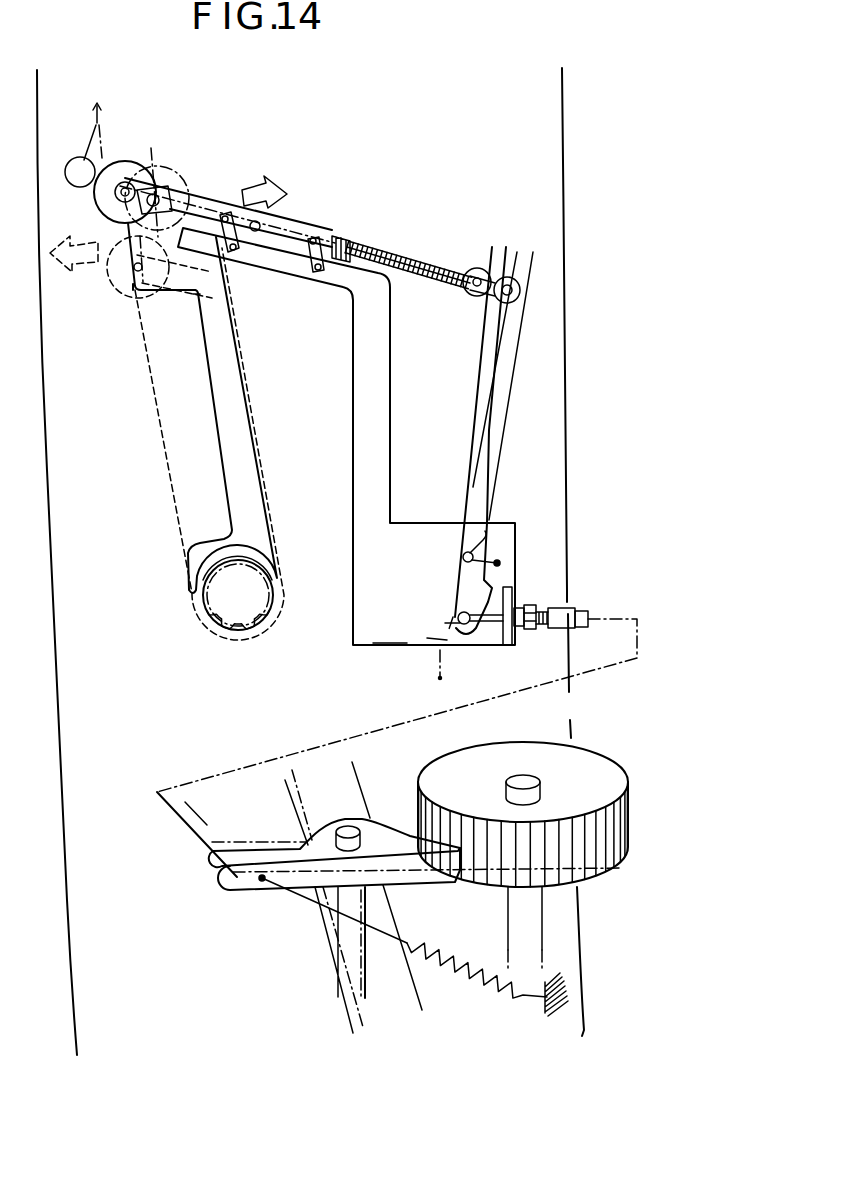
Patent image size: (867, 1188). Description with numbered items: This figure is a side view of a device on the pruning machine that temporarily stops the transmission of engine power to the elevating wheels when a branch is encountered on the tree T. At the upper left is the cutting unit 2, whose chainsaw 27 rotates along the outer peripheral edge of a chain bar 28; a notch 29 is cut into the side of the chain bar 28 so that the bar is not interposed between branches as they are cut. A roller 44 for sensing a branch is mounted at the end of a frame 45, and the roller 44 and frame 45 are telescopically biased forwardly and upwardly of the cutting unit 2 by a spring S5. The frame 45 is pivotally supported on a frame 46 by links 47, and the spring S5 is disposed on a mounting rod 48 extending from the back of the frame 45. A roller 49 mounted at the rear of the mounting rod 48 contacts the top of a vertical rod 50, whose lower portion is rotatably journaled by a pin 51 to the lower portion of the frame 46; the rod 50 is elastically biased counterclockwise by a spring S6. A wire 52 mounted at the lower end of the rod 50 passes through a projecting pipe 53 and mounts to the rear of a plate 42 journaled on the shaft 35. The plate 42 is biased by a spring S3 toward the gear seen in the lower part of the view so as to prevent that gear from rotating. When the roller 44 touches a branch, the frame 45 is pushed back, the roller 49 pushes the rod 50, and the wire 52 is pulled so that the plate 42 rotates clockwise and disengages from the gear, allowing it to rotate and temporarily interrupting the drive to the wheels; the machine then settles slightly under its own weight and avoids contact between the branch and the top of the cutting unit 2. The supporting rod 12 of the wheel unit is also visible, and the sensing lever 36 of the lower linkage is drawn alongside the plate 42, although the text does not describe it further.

The cutting unit 2 is at (122, 371).
The supporting rod 12 is at (572, 745).
The chainsaw 27 is at (158, 438).
The chain bar 28 is at (252, 468).
The notch 29 is at (173, 391).
The shaft 35 is at (343, 932).
The lever 36 is at (353, 782).
The plate 42 is at (397, 853).
The roller 44 is at (137, 167).
The frame 45 is at (351, 259).
The frame 46 is at (288, 272).
The links 47 is at (333, 238).
The mounting rod 48 is at (410, 258).
The roller 49 is at (505, 280).
The vertical rod 50 is at (520, 350).
The pin 51 is at (463, 557).
The wire 52 is at (480, 620).
The projecting pipe 53 is at (577, 607).
The spring S3 is at (498, 988).
The spring S5 is at (375, 243).
The spring S6 is at (483, 540).
The tree T is at (570, 477).